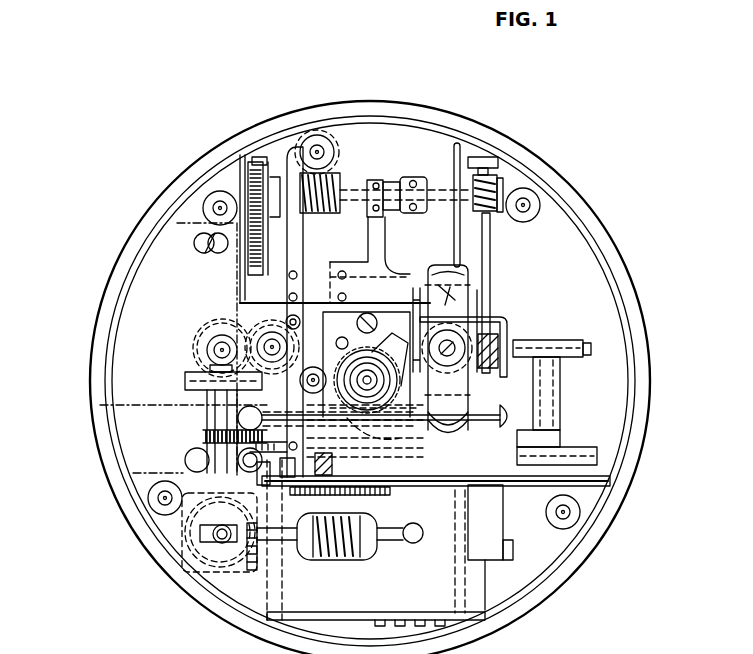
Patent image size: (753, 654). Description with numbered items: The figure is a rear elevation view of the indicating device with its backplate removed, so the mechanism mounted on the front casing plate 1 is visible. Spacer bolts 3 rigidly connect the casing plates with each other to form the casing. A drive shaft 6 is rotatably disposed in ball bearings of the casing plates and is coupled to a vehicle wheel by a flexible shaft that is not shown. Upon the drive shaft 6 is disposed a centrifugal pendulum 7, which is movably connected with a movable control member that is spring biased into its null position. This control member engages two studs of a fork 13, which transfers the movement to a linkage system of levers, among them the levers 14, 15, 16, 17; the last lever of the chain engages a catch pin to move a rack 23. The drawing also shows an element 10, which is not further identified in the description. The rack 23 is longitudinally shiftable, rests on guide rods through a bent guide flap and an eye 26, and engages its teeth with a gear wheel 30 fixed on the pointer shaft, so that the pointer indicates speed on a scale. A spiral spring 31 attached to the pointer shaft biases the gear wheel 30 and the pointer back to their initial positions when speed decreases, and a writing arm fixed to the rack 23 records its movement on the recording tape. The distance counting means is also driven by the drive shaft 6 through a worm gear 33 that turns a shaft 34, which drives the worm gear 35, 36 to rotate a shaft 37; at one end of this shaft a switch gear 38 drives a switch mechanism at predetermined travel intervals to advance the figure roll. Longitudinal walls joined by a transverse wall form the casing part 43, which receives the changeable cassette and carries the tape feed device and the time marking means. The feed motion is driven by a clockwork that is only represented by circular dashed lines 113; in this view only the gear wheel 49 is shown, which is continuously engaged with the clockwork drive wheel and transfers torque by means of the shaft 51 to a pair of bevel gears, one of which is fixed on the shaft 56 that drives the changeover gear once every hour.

The casing plate 1 is at (130, 293).
The spacer bolts 3 is at (158, 498).
The drive shaft 6 is at (478, 320).
The centrifugal pendulum 7 is at (557, 343).
The rod 10 is at (384, 424).
The fork 13 is at (490, 352).
The lever 14 is at (582, 341).
The lever 15 is at (563, 453).
The lever 16 is at (552, 433).
The lever 17 is at (558, 388).
The rack 23 is at (260, 405).
The eye 26 is at (365, 412).
The gear wheel 30 is at (343, 394).
The spiral spring 31 is at (85, 460).
The worm gear 33 is at (504, 320).
The shaft 34 is at (488, 237).
The worm gear 35 is at (500, 198).
The worm gear 36 is at (498, 186).
The shaft 37 is at (433, 190).
The switch gear 38 is at (262, 157).
The casing part 43 is at (297, 585).
The gear wheel 49 is at (187, 372).
The shaft 51 is at (220, 424).
The shaft 56 is at (207, 543).
The clockwork 113 is at (233, 346).